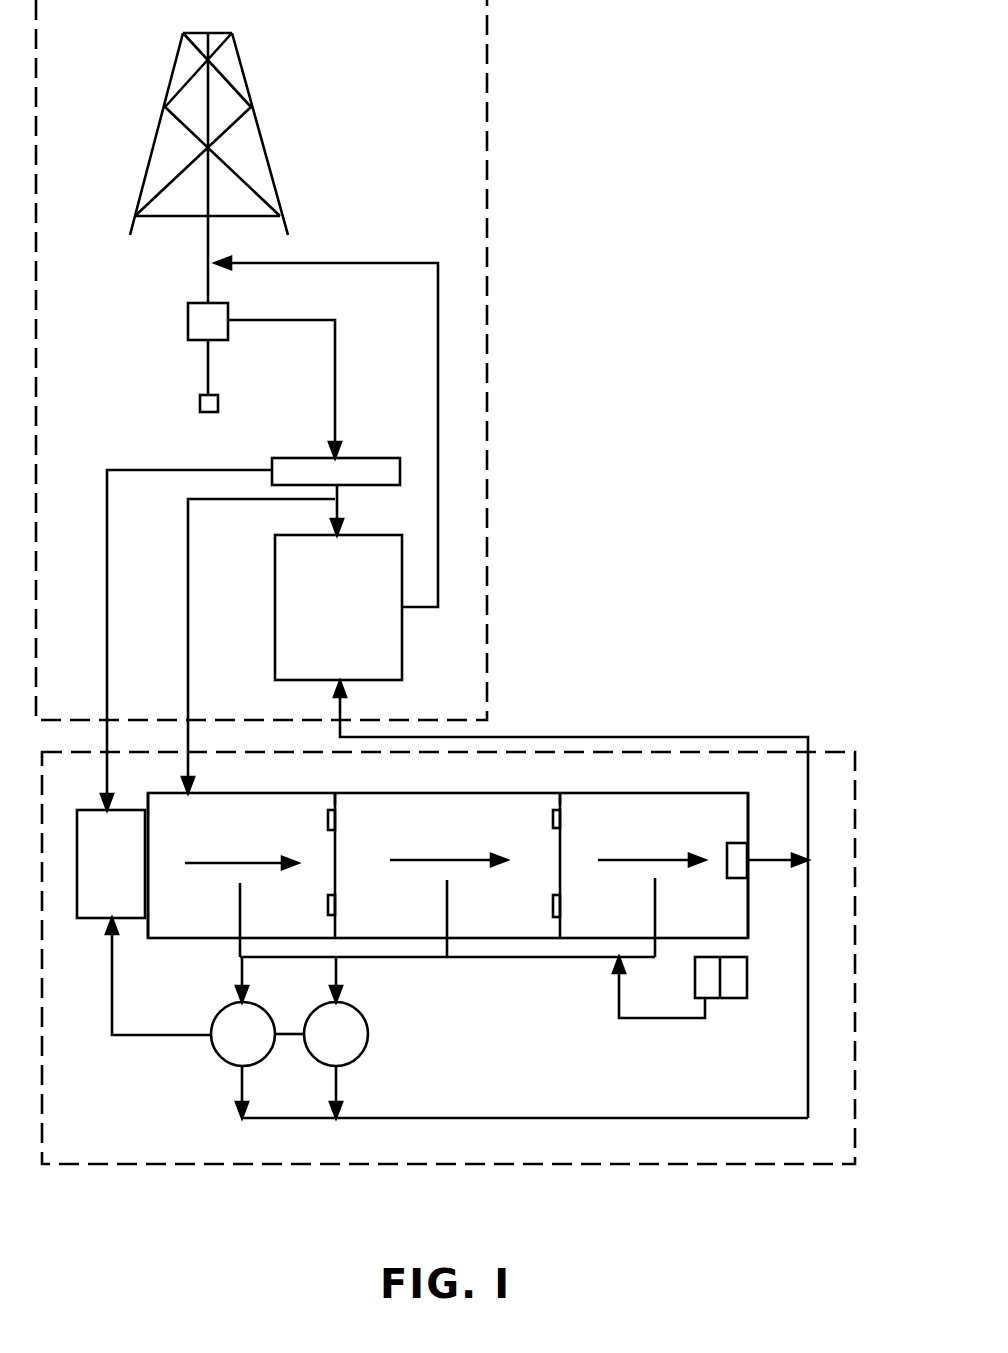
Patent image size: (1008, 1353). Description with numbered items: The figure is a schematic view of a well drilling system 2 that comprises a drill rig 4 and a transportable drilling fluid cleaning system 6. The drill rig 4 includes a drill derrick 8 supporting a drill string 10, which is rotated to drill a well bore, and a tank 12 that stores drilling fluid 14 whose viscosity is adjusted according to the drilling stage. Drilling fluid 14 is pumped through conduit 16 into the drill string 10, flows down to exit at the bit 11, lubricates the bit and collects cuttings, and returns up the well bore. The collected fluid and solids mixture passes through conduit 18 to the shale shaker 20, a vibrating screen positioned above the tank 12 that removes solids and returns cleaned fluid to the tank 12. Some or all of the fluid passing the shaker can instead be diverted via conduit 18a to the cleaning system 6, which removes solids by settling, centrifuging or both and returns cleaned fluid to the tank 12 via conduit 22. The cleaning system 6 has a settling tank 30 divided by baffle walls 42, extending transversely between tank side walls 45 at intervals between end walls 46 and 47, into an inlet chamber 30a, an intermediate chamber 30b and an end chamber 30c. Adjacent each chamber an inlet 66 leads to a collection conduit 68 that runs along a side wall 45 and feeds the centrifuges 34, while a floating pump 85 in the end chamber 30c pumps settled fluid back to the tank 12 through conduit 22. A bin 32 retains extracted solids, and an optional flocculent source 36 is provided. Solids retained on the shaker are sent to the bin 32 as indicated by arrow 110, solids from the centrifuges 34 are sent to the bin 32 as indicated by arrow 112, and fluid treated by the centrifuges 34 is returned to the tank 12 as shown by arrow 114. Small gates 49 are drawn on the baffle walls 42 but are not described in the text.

The well drilling system 2 is at (697, 300).
The drill rig 4 is at (462, 90).
The transportable drilling fluid cleaning system 6 is at (838, 915).
The drill derrick 8 is at (265, 150).
The drill string 10 is at (208, 364).
The bit 11 is at (218, 403).
The tank 12 is at (402, 652).
The drilling fluid 14 is at (356, 621).
The conduit 16 is at (355, 258).
The conduit 18 is at (275, 320).
The conduit 18a is at (188, 572).
The shale shaker 20 is at (372, 467).
The conduit 22 is at (600, 735).
The settling tank 30 is at (480, 918).
The inlet chamber 30a is at (243, 837).
The intermediate chamber 30b is at (468, 837).
The end chamber 30c is at (700, 835).
The bin 32 is at (124, 881).
The centrifuge 34 is at (220, 1058).
The flocculent source 36 is at (733, 983).
The baffle walls 42 is at (340, 800).
The tank side walls 45 is at (540, 792).
The end wall 46 is at (148, 895).
The end wall 47 is at (745, 915).
The gate valve 49 is at (328, 822).
The inlet 66 is at (240, 890).
The collection conduit 68 is at (425, 957).
The floating pump 85 is at (735, 858).
The arrow 110 is at (140, 468).
The arrow 112 is at (135, 1040).
The arrow 114 is at (565, 1120).